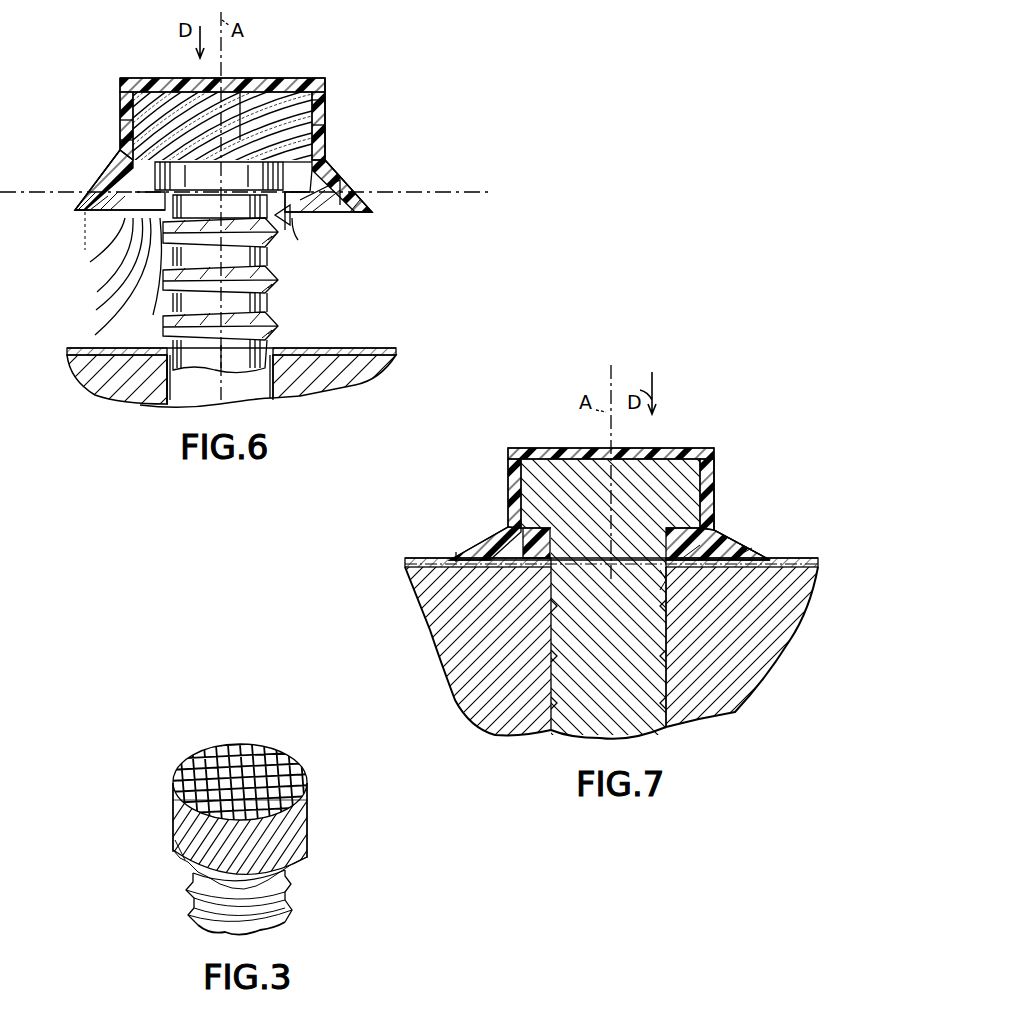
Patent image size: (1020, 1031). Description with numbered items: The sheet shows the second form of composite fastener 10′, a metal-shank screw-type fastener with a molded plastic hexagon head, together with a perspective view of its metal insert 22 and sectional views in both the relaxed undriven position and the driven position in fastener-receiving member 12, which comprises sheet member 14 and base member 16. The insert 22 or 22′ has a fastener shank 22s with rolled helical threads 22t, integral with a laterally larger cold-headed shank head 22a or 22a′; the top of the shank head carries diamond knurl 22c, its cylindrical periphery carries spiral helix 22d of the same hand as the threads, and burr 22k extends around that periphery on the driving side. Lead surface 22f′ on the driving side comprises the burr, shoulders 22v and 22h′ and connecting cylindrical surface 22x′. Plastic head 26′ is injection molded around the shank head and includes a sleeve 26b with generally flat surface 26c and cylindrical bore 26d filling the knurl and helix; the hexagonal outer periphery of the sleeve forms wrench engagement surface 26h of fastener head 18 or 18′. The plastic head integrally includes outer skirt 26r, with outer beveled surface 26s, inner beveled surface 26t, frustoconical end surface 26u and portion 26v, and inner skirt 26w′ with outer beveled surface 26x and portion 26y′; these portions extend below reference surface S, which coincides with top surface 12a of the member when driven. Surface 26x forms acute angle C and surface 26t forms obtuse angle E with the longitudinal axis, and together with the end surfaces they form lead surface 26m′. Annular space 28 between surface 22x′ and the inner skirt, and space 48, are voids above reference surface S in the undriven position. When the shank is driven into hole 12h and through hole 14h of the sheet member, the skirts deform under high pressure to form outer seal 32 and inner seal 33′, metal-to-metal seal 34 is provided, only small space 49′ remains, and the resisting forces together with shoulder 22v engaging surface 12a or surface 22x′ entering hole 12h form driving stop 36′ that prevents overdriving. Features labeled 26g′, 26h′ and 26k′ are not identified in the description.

In FIG. 6, the fastener 10′ is at (93, 82).
In FIG. 7, the fastener 10′ is at (736, 428).
In FIG. 6, the fastener-receiving member 12 is at (396, 364).
In FIG. 7, the fastener-receiving member 12 is at (405, 565).
In FIG. 6, the top surface 12a is at (346, 348).
In FIG. 7, the top surface 12a is at (456, 558).
In FIG. 6, the hole 12h is at (167, 395).
In FIG. 7, the hole 12h is at (672, 720).
In FIG. 6, the sheet member 14 is at (398, 350).
In FIG. 7, the sheet member 14 is at (405, 562).
In FIG. 7, the hole 14h is at (630, 728).
In FIG. 6, the base member 16 is at (392, 372).
In FIG. 7, the base member 16 is at (435, 628).
In FIG. 6, the fastener head 18 is at (125, 112).
In FIG. 7, the fastener head 18′ is at (716, 478).
In FIG. 6, the metal insert 22 is at (125, 80).
In FIG. 3, the metal insert 22 is at (324, 854).
In FIG. 6, the metal insert 22′ is at (283, 92).
In FIG. 7, the metal insert 22′ is at (650, 520).
In FIG. 3, the shank head 22a is at (300, 826).
In FIG. 6, the shank head 22a′ is at (240, 100).
In FIG. 6, the diamond knurl 22c is at (268, 85).
In FIG. 3, the diamond knurl 22c is at (280, 770).
In FIG. 3, the spiral helix 22d is at (174, 836).
In FIG. 6, the lead surface 22f′ is at (325, 125).
In FIG. 6, the shoulder 22h′ is at (330, 100).
In FIG. 6, the burr 22k is at (312, 162).
In FIG. 3, the burr 22k is at (182, 880).
In FIG. 6, the fastener shank 22s is at (275, 300).
In FIG. 3, the fastener shank 22s is at (282, 896).
In FIG. 6, the helical threads 22t is at (282, 335).
In FIG. 3, the helical threads 22t is at (240, 917).
In FIG. 6, the shoulder 22v is at (250, 206).
In FIG. 6, the cylindrical surface 22x′ is at (262, 176).
In FIG. 6, the plastic head 26′ is at (120, 86).
In FIG. 7, the plastic head 26′ is at (718, 458).
In FIG. 6, the sleeve 26b is at (130, 140).
In FIG. 6, the flat surface 26c is at (318, 95).
In FIG. 6, the cylindrical bore 26d is at (128, 132).
In FIG. 6, the shell tab 26g′ is at (288, 215).
In FIG. 6, the wrench engagement surface 26h is at (125, 150).
In FIG. 7, the shell flange 26h′ is at (722, 532).
In FIG. 6, the shell lip 26k′ is at (262, 256).
In FIG. 6, the lead surface 26m′ is at (97, 292).
In FIG. 6, the outer skirt 26r is at (348, 190).
In FIG. 6, the outer beveled surface 26s is at (85, 200).
In FIG. 6, the inner beveled surface 26t is at (90, 262).
In FIG. 6, the end surface 26u is at (90, 212).
In FIG. 6, the portion 26v is at (95, 220).
In FIG. 6, the inner skirt 26w′ is at (96, 310).
In FIG. 6, the outer beveled surface 26x is at (95, 335).
In FIG. 6, the portion 26y′ is at (153, 315).
In FIG. 6, the space 28 is at (185, 302).
In FIG. 7, the outer seal 32 is at (456, 555).
In FIG. 7, the inner seal 33′ is at (675, 576).
In FIG. 7, the metal-to-metal seal 34 is at (720, 512).
In FIG. 7, the driving stop 36′ is at (478, 560).
In FIG. 6, the space 48 is at (325, 180).
In FIG. 7, the remaining space 49′ is at (750, 552).
In FIG. 6, the reference surface S is at (255, 192).
In FIG. 6, the obtuse angle E is at (95, 236).
In FIG. 6, the acute angle C is at (299, 226).